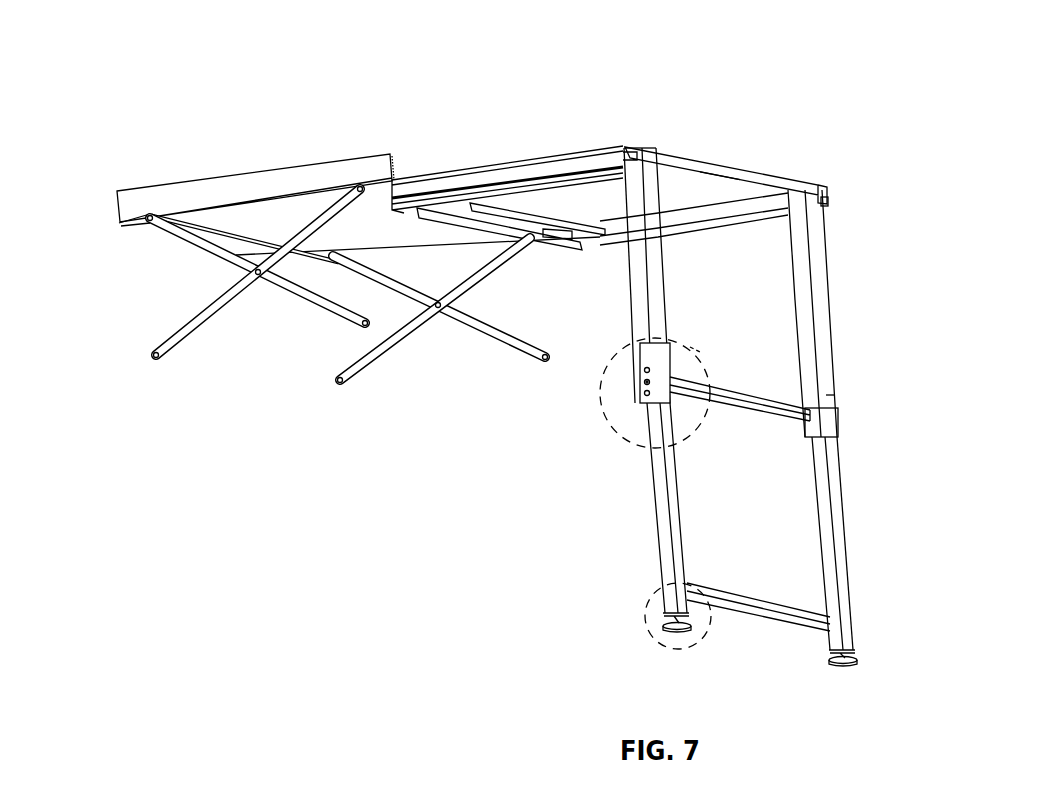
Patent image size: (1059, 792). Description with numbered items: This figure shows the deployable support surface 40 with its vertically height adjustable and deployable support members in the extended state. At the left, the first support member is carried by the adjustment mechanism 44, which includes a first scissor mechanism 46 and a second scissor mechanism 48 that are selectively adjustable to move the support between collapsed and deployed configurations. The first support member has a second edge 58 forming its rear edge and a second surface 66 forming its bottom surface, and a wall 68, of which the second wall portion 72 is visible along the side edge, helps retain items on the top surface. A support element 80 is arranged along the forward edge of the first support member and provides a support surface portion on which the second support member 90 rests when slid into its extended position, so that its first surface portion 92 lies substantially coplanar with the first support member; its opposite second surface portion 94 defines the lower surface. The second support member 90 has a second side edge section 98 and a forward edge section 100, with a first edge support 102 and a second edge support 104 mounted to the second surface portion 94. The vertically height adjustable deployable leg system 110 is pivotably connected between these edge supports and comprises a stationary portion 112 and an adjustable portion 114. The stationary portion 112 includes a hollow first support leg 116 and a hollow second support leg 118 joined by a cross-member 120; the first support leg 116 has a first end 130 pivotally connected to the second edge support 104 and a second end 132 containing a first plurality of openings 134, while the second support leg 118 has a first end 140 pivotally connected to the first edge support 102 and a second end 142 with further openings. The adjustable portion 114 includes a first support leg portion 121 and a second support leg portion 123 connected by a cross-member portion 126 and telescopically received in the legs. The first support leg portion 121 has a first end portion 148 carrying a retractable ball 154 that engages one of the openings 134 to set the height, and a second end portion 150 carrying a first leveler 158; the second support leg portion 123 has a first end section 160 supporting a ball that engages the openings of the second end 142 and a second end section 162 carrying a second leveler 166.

The deployable support surface 40 is at (320, 88).
The adjustment mechanism 44 is at (375, 400).
The first scissor mechanism 46 is at (330, 312).
The second scissor mechanism 48 is at (510, 345).
The second edge 58 is at (148, 230).
The second surface 66 is at (226, 240).
The wall 68 is at (145, 176).
The second wall portion 72 is at (227, 188).
The support element 80 is at (528, 250).
The second support member 90 is at (790, 176).
The first surface portion 92 is at (645, 152).
The second surface portion 94 is at (712, 185).
The second side edge section 98 is at (497, 168).
The forward edge section 100 is at (737, 168).
The first edge support 102 is at (672, 232).
The second edge support 104 is at (553, 173).
The vertically height adjustable deployable leg system 110 is at (870, 530).
The stationary portion 112 is at (838, 350).
The adjustable portion 114 is at (850, 580).
The first support leg 116 is at (640, 262).
The second support leg 118 is at (805, 240).
The cross-member 120 is at (822, 440).
The first support leg portion 121 is at (658, 482).
The second support leg portion 123 is at (835, 480).
The cross-member portion 126 is at (757, 620).
The first end 130 is at (647, 167).
The second end 132 is at (668, 398).
The first plurality of openings 134 is at (634, 374).
The first end 140 is at (828, 200).
The second end 142 is at (828, 428).
The first end portion 148 is at (700, 350).
The second end portion 150 is at (660, 605).
The retractable ball 154 is at (638, 384).
The first leveler 158 is at (640, 650).
The first end section 160 is at (832, 395).
The second end section 162 is at (848, 630).
The second leveler 166 is at (850, 662).